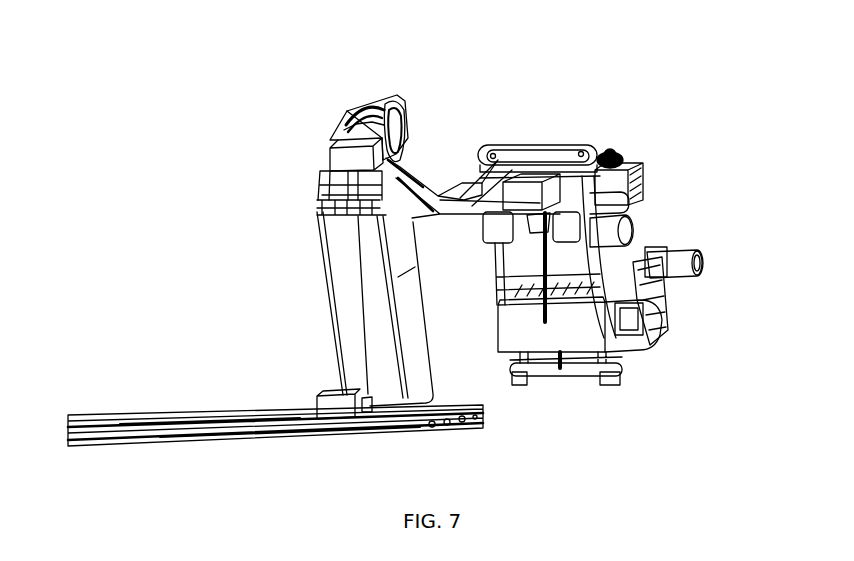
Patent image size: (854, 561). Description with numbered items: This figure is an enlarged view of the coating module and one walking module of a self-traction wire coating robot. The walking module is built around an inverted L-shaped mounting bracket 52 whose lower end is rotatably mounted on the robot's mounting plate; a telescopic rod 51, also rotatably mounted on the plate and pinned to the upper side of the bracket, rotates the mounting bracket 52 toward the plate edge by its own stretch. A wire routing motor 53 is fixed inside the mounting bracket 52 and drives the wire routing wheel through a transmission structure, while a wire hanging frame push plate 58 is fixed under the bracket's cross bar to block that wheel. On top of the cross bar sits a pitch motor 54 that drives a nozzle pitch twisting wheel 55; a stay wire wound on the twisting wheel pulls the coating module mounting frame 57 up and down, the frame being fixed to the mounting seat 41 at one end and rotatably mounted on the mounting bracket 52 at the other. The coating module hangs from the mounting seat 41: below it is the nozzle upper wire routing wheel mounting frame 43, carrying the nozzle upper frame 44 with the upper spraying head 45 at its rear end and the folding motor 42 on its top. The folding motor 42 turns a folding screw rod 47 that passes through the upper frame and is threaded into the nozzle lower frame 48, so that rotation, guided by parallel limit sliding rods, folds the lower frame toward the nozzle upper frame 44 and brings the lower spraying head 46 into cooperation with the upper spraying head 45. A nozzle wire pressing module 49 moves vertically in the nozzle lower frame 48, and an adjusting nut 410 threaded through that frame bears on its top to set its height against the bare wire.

The mounting seat 41 is at (510, 147).
The folding motor 42 is at (536, 157).
The nozzle upper wire routing wheel mounting frame 43 is at (620, 152).
The nozzle upper frame 44 is at (630, 163).
The upper spraying head 45 is at (647, 183).
The lower spraying head 46 is at (693, 250).
The folding screw rod 47 is at (627, 313).
The nozzle lower frame 48 is at (590, 328).
The nozzle wire pressing module 49 is at (550, 305).
The adjusting nut 410 is at (548, 378).
The telescopic rod 51 is at (355, 368).
The mounting bracket 52 is at (330, 250).
The wire routing motor 53 is at (342, 144).
The pitch motor 54 is at (328, 134).
The nozzle pitch twisting wheel 55 is at (347, 110).
The coating module mounting frame 57 is at (436, 180).
The wire hanging frame push plate 58 is at (372, 105).